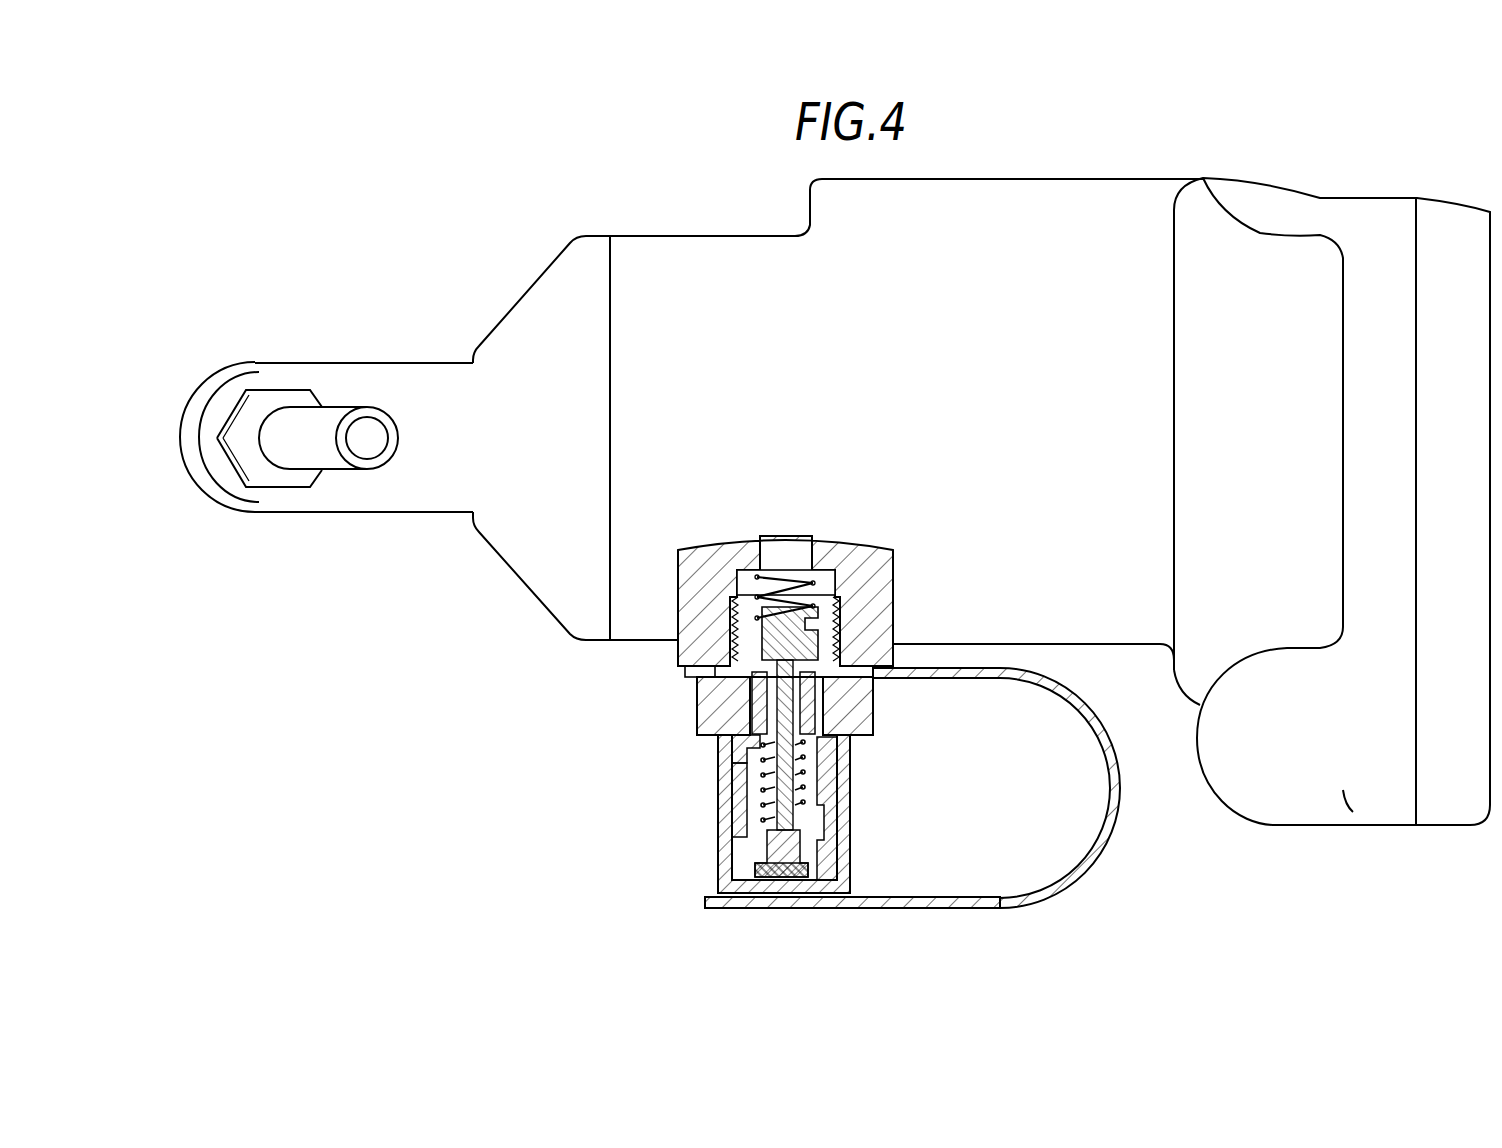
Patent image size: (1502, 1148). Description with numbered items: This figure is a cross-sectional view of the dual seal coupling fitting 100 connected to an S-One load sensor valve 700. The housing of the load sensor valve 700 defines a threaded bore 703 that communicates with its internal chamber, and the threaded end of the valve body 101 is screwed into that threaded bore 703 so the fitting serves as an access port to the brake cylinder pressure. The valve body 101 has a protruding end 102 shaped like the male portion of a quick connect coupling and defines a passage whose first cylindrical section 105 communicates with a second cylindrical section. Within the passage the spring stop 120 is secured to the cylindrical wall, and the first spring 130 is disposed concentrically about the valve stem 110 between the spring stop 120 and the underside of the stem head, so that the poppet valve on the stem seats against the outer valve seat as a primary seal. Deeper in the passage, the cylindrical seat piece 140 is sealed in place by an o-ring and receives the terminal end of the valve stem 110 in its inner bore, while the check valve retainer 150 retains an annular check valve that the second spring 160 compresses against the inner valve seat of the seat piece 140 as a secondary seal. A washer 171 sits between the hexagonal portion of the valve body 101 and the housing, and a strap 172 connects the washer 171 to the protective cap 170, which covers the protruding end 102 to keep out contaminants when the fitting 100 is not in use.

The S-1 load sensor valve 700 is at (545, 292).
The threaded bore 703 is at (706, 597).
The second spring 160 is at (797, 585).
The check valve retainer 150 is at (838, 612).
The washer 171 is at (690, 678).
The cylindrical seat piece 140 is at (755, 702).
The valve body 101 is at (878, 711).
The spring stop 120 is at (755, 745).
The first cylindrical section 105 is at (810, 790).
The first spring 130 is at (750, 805).
The protruding end 102 is at (842, 825).
The valve stem 110 is at (770, 848).
The dual seal coupling fitting 100 is at (651, 807).
The strap 172 is at (1098, 856).
The protective cap 170 is at (806, 910).